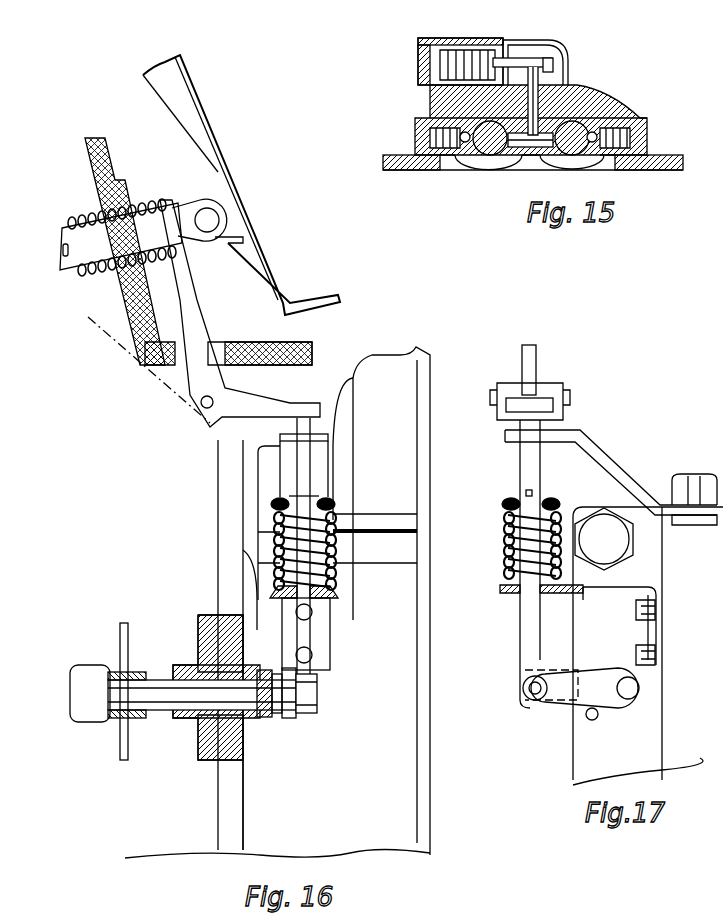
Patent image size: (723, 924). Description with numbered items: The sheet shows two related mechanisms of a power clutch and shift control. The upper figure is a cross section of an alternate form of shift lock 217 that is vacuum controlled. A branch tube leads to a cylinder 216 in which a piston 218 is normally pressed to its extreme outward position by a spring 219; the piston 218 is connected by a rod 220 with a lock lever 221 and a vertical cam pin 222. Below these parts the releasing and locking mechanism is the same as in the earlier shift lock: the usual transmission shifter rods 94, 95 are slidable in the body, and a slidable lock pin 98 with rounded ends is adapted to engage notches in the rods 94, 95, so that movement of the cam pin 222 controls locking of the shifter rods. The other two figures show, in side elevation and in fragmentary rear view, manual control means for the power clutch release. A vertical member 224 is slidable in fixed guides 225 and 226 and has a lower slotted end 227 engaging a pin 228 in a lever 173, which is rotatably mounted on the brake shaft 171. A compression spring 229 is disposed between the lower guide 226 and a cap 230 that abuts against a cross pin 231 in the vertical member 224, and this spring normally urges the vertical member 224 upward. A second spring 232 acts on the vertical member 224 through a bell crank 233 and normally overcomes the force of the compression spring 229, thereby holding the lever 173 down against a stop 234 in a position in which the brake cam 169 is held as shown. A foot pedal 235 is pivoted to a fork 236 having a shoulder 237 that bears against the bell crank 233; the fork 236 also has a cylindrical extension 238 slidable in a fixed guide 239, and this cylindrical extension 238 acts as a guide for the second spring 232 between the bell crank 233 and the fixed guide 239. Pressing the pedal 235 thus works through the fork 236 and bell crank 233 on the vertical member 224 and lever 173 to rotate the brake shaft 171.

In FIG. 15, the transmission shifter rod 94 is at (480, 157).
In FIG. 15, the transmission shifter rod 95 is at (585, 157).
In FIG. 15, the lock pin 98 is at (517, 148).
In FIG. 15, the cylinder 216 is at (476, 48).
In FIG. 15, the alternate form of shift lock 217 is at (585, 97).
In FIG. 15, the piston 218 is at (504, 42).
In FIG. 15, the spring 219 is at (457, 42).
In FIG. 15, the rod 220 is at (538, 62).
In FIG. 15, the lock lever 221 is at (556, 70).
In FIG. 15, the vertical cam pin 222 is at (545, 108).
In FIG. 16, the brake cam 169 is at (93, 708).
In FIG. 16, the brake shaft 171 is at (165, 695).
In FIG. 17, the brake shaft 171 is at (640, 688).
In FIG. 16, the lever 173 is at (290, 712).
In FIG. 17, the lever 173 is at (580, 690).
In FIG. 16, the vertical member 224 is at (305, 476).
In FIG. 17, the vertical member 224 is at (520, 612).
In FIG. 16, the fixed guide 225 is at (330, 438).
In FIG. 17, the fixed guide 225 is at (505, 434).
In FIG. 16, the fixed guide 226 is at (340, 596).
In FIG. 17, the fixed guide 226 is at (500, 589).
In FIG. 17, the slotted end 227 is at (536, 700).
In FIG. 17, the pin 228 is at (523, 688).
In FIG. 16, the compression spring 229 is at (332, 571).
In FIG. 17, the compression spring 229 is at (507, 540).
In FIG. 16, the cap 230 is at (336, 505).
In FIG. 17, the cap 230 is at (502, 505).
In FIG. 16, the cross pin 231 is at (322, 495).
In FIG. 17, the cross pin 231 is at (525, 492).
In FIG. 16, the second spring 232 is at (103, 275).
In FIG. 16, the bell crank 233 is at (200, 334).
In FIG. 17, the bell crank 233 is at (537, 363).
In FIG. 17, the stop 234 is at (598, 717).
In FIG. 16, the foot pedal 235 is at (245, 208).
In FIG. 16, the fork 236 is at (190, 210).
In FIG. 16, the shoulder 237 is at (182, 250).
In FIG. 16, the cylindrical extension 238 is at (85, 250).
In FIG. 16, the fixed guide 239 is at (82, 278).